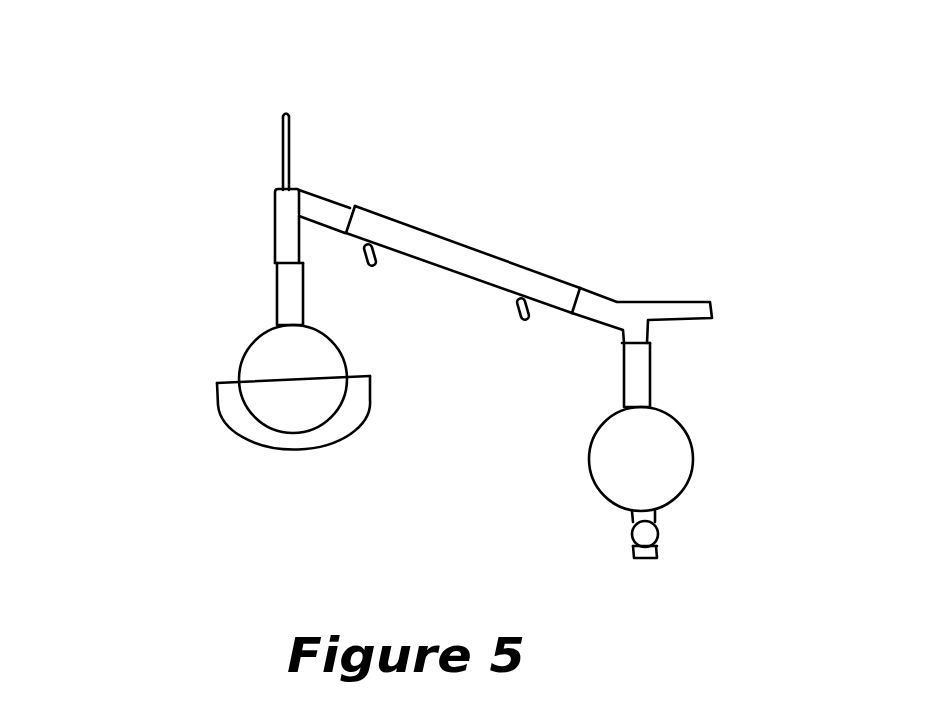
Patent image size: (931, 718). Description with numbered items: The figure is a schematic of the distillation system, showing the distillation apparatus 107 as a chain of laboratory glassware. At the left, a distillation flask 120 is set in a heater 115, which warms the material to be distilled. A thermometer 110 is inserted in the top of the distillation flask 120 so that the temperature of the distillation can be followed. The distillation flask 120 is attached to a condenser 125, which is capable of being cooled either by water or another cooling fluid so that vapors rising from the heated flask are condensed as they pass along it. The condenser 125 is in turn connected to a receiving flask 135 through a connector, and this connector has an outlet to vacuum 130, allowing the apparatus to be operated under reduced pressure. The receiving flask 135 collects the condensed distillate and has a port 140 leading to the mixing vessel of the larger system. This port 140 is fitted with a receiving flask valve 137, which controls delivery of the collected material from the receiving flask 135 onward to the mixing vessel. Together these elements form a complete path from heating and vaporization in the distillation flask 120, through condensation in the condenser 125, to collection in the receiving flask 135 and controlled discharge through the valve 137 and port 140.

The distillation apparatus 107 is at (366, 165).
The thermometer 110 is at (280, 125).
The heater 115 is at (220, 408).
The distillation flask 120 is at (243, 348).
The condenser 125 is at (484, 252).
The outlet to vacuum 130 is at (698, 318).
The receiving flask 135 is at (588, 450).
The receiving flask valve 137 is at (631, 533).
The port 140 is at (660, 557).